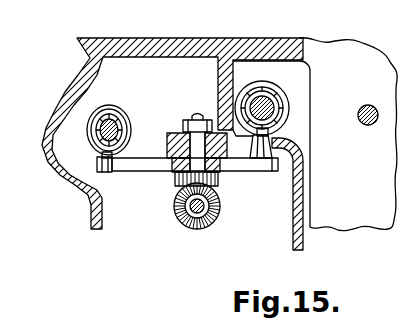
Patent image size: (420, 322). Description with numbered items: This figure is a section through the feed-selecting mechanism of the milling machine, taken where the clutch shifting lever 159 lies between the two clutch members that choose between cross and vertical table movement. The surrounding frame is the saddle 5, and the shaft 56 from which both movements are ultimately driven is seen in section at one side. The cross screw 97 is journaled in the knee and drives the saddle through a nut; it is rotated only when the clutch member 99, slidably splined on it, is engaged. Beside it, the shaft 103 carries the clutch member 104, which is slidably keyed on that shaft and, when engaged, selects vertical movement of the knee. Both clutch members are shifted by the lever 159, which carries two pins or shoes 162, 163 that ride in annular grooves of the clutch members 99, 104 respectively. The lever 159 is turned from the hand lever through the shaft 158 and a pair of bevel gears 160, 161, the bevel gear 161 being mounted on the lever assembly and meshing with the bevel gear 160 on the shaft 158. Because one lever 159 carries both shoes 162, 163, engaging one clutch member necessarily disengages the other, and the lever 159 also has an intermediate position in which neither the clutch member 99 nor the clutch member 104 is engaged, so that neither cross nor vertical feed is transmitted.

The saddle 5 is at (346, 222).
The shaft 56 is at (358, 120).
The cross screw 97 is at (275, 104).
The clutch member 99 is at (283, 120).
The shaft 103 is at (93, 129).
The clutch member 104 is at (105, 105).
The shaft 158 is at (197, 114).
The lever 159 is at (141, 157).
The bevel gear 160 is at (220, 208).
The bevel gear 161 is at (180, 178).
The pin or shoe 162 is at (280, 168).
The pin or shoe 163 is at (96, 156).